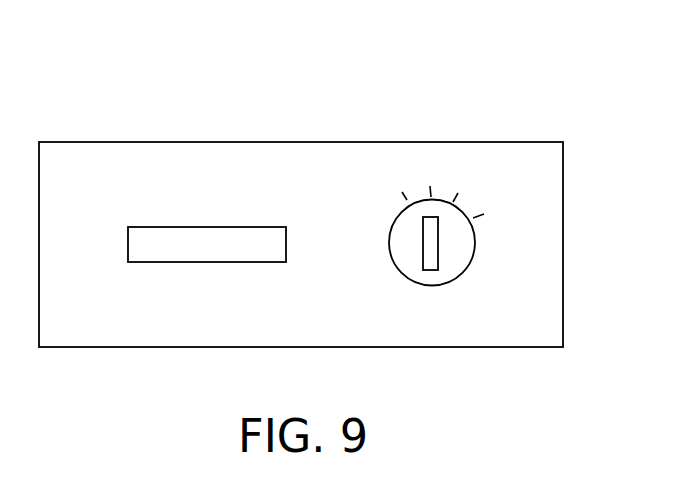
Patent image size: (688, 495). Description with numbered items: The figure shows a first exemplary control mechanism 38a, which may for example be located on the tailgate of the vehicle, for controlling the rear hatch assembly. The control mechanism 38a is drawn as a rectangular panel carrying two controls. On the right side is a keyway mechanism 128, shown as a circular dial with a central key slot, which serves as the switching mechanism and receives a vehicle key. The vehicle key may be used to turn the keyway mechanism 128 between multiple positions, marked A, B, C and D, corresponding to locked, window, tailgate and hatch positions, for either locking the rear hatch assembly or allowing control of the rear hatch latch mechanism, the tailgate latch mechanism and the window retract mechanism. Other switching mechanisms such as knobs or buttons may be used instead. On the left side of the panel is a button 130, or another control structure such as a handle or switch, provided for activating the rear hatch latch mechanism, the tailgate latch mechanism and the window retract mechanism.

The first exemplary control mechanism 38a is at (526, 87).
The button 130 is at (183, 227).
The keyway mechanism 128 is at (397, 272).